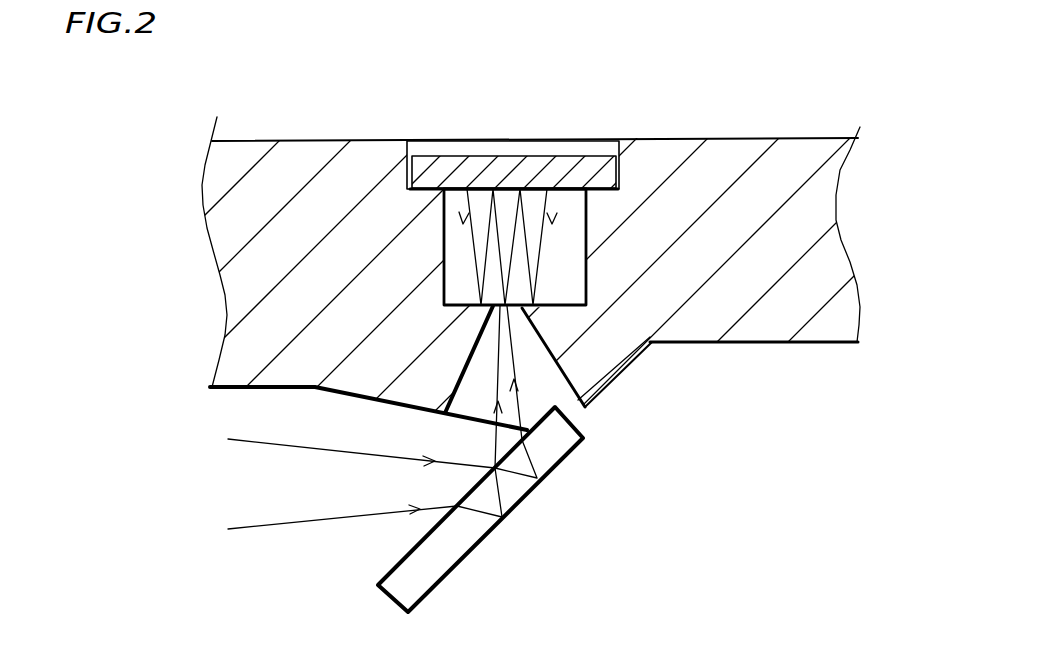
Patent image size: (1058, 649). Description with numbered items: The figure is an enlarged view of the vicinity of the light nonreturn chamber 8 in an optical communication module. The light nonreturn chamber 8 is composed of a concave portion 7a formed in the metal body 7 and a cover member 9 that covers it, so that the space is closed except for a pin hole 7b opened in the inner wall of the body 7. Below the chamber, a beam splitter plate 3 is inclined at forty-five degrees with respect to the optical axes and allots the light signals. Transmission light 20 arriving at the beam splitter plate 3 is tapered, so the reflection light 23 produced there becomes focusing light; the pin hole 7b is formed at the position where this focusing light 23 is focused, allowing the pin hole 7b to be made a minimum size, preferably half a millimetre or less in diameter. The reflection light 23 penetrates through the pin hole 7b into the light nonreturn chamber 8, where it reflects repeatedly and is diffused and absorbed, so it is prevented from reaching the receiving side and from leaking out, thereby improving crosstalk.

The body 7 is at (295, 145).
The concave portion 7a is at (587, 277).
The pin hole 7b is at (520, 318).
The light nonreturn chamber 8 is at (450, 236).
The cover member 9 is at (547, 162).
The reflection light 23 is at (512, 212).
The transmission light 20 is at (335, 452).
The beam splitter plate 3 is at (448, 547).